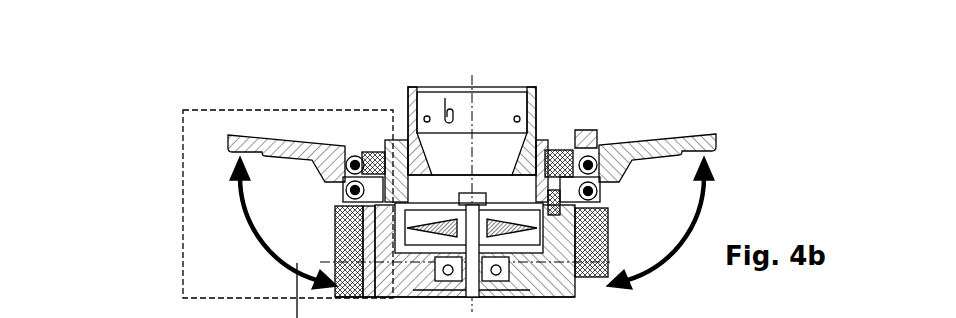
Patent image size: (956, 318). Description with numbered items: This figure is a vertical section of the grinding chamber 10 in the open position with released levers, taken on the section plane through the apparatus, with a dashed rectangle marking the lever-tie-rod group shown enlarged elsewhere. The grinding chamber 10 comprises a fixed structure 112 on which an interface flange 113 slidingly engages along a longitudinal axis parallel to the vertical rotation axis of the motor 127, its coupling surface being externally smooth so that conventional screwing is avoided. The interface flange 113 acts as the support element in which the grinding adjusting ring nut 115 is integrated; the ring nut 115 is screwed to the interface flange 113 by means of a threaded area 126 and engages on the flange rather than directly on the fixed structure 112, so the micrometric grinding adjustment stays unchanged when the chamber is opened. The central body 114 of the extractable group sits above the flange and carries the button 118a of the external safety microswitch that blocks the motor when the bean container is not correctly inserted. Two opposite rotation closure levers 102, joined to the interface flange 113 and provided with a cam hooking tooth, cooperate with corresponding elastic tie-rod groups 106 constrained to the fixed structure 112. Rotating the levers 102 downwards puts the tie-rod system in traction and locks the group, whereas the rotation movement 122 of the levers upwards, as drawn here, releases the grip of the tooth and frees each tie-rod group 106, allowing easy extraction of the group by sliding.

The grinding chamber 10 is at (140, 55).
The rotation closure lever 102 is at (300, 142).
The tie-rod group 106 is at (341, 191).
The fixed structure of the grinding chamber 112 is at (558, 240).
The interface flange 113 is at (377, 135).
The central body of the extractable group 114 is at (418, 135).
The grinding adjusting ring nut 115 is at (573, 143).
The button 118a is at (449, 98).
The rotation movement of the levers 122 is at (254, 229).
The ring nut-interface flange coupling threaded area 126 is at (516, 114).
The rotation axis of the motor 127 is at (491, 276).